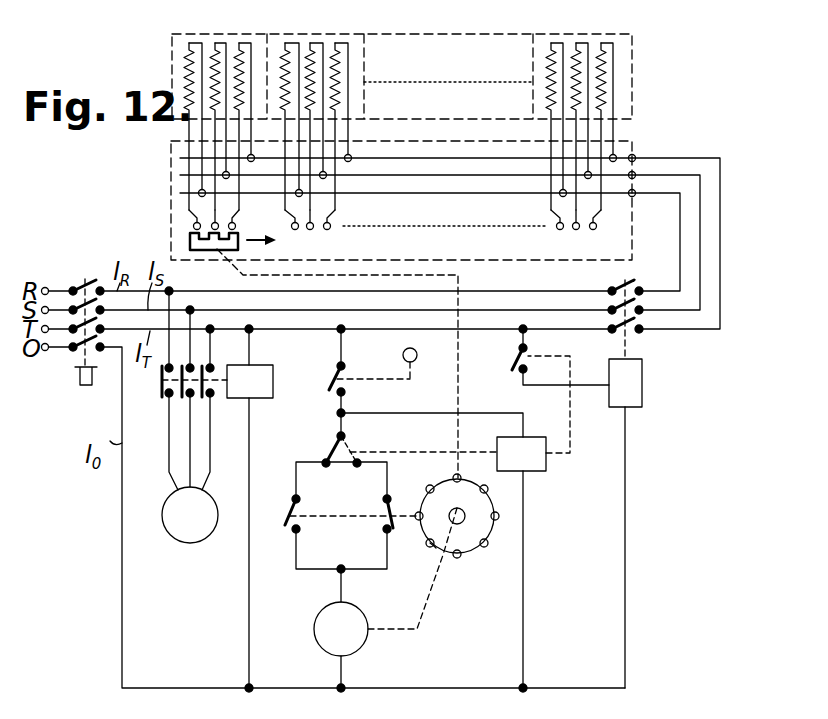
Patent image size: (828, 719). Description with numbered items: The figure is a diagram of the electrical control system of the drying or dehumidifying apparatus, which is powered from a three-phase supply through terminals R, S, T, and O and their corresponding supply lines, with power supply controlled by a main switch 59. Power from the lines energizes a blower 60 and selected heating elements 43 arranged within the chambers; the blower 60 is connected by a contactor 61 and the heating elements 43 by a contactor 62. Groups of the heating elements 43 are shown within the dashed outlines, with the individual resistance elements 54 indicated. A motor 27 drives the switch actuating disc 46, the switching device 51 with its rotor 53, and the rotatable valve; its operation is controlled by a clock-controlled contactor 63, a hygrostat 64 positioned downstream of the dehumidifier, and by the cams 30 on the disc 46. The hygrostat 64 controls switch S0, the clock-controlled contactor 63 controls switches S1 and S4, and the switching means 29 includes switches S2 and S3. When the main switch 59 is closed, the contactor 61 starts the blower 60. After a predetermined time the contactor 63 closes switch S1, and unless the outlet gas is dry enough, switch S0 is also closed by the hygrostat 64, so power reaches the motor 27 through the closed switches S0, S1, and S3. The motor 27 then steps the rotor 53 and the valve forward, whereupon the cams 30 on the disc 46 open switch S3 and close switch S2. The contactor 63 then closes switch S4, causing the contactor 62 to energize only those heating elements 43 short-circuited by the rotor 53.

The heating elements 43 is at (172, 52).
The heating resistance elements 54 is at (347, 84).
The switching device 51 is at (171, 190).
The rotor 53 is at (190, 240).
The main switch 59 is at (85, 385).
The blower 60 is at (170, 538).
The contactor 61 is at (258, 398).
The contactor 62 is at (642, 383).
The clock-controlled contactor 63 is at (546, 465).
The hygrostat 64 is at (415, 360).
The motor 27 is at (360, 648).
The switching means 29 is at (341, 535).
The cams 30 is at (488, 489).
The switch actuating disc 46 is at (468, 545).
The switch S0 is at (333, 380).
The switch S1 is at (336, 452).
The switch S2 is at (288, 512).
The switch S3 is at (402, 503).
The switch S4 is at (516, 360).